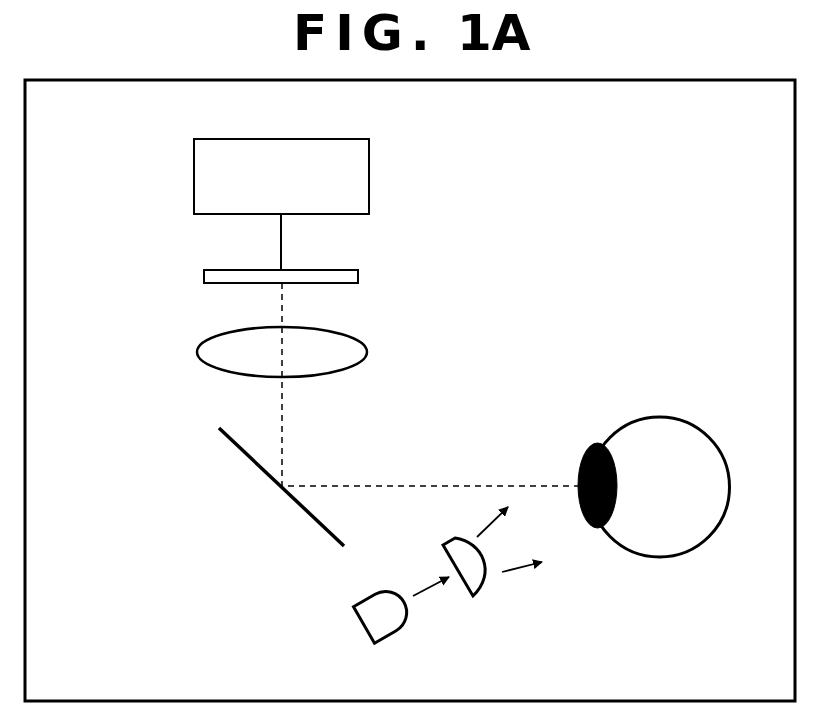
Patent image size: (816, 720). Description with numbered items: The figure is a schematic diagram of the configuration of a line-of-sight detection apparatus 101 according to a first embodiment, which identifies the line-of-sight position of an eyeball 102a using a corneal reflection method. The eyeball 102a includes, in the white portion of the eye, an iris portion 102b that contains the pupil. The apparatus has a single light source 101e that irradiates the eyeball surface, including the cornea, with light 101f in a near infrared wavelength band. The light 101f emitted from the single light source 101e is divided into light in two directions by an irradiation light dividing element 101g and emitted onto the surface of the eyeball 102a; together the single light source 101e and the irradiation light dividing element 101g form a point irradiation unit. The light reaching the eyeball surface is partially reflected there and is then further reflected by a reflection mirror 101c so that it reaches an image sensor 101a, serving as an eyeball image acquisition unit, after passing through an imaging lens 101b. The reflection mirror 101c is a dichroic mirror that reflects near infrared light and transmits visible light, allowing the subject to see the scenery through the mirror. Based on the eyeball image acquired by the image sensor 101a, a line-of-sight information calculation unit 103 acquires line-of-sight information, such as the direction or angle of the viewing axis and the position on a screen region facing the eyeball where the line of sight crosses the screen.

The line-of-sight detection apparatus 101 is at (513, 246).
The image sensor 101a is at (204, 276).
The imaging lens 101b is at (198, 350).
The reflection mirror 101c is at (245, 455).
The single light source 101e is at (363, 623).
The light 101f is at (431, 591).
The irradiation light dividing element 101g is at (473, 597).
The eyeball 102a is at (650, 417).
The iris portion 102b is at (584, 519).
The line-of-sight information calculation unit 103 is at (280, 138).